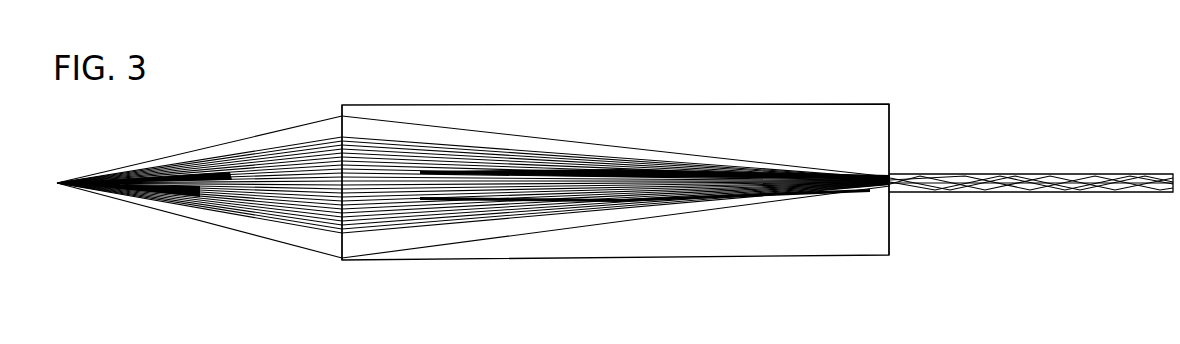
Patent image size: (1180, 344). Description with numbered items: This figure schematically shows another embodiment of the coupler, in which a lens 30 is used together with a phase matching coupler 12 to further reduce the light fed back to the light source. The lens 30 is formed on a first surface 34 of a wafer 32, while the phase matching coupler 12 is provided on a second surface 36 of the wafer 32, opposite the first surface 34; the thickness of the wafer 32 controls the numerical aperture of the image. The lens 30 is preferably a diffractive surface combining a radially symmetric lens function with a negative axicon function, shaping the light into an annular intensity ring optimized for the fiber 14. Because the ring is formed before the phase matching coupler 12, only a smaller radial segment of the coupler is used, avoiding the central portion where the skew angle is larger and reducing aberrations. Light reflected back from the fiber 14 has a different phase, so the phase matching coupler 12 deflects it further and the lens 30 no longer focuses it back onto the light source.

The phase matching coupler 12 is at (895, 175).
The fiber 14 is at (1027, 193).
The lens 30 is at (341, 136).
The wafer 32 is at (703, 105).
The first surface 34 is at (343, 106).
The second surface 36 is at (892, 115).